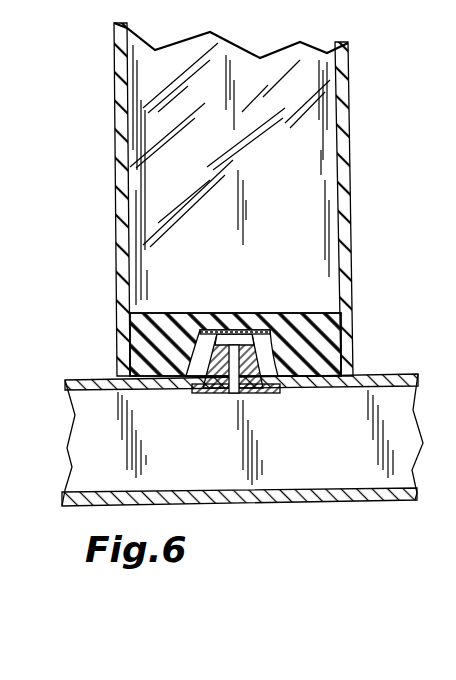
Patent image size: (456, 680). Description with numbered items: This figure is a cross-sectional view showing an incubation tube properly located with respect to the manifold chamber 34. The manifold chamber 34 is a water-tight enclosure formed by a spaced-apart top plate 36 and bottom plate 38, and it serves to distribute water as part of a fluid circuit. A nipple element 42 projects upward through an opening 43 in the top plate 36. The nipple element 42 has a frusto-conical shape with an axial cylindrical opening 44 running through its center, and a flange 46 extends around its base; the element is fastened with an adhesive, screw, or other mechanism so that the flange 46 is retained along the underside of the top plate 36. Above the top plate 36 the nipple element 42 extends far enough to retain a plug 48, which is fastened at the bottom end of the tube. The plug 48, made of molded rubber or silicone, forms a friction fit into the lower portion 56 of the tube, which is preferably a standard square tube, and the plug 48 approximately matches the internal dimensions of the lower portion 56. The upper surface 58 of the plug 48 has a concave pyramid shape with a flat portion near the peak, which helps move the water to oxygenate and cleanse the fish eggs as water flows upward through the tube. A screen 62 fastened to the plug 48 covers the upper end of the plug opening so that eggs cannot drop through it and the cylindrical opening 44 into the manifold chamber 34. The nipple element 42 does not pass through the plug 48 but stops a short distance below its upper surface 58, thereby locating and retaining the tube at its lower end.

The manifold chamber 34 is at (62, 470).
The top plate 36 is at (390, 373).
The bottom plate 38 is at (312, 501).
The nipple element 42 is at (266, 349).
The opening 43 is at (193, 386).
The axial cylindrical opening 44 is at (262, 333).
The flange 46 is at (266, 395).
The plug 48 is at (170, 303).
The lower portion of tube 56 is at (350, 113).
The upper surface of plug 58 is at (180, 326).
The screen 62 is at (237, 330).